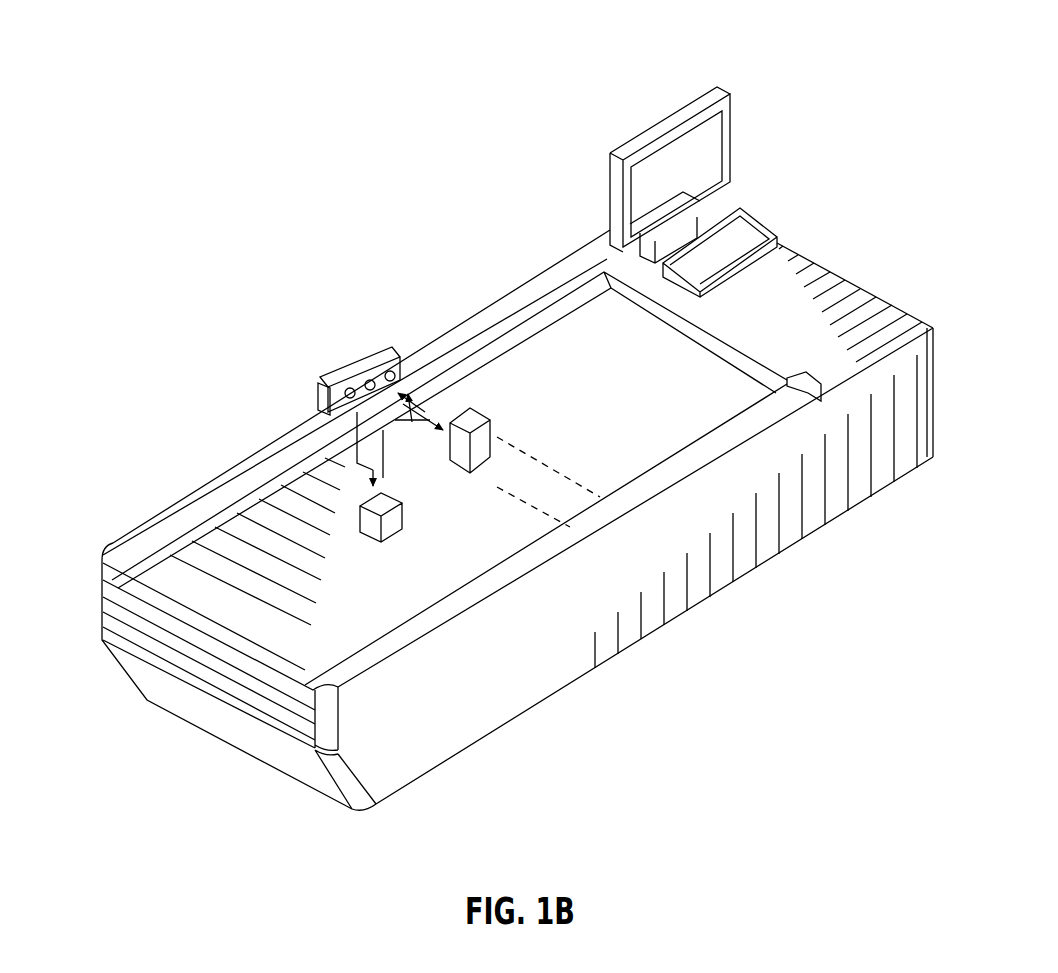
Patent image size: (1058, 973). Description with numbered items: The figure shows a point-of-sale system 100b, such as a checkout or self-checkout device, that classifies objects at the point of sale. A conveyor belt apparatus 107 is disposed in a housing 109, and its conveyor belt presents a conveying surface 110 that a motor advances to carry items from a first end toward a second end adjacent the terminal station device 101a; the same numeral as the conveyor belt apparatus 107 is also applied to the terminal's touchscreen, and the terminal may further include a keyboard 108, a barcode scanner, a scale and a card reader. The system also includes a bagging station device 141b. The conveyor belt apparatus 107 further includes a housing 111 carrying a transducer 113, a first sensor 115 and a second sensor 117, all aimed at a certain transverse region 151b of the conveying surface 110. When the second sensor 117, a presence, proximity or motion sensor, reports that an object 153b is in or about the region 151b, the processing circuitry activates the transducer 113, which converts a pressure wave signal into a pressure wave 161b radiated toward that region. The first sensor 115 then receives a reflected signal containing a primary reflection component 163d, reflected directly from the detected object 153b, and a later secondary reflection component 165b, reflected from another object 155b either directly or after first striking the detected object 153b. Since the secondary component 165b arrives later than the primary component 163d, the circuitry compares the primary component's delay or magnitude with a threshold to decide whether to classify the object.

The POS system 100b is at (120, 79).
The display device 101a is at (726, 68).
The conveyor belt apparatus 107 is at (700, 183).
The keyboard 108 is at (745, 238).
The housing 109 is at (550, 643).
The conveying surface 110 is at (630, 378).
The housing 111 is at (379, 339).
The transducer 113 is at (349, 389).
The first sensor 115 is at (393, 373).
The second sensor 117 is at (372, 381).
The bagging station device 141b is at (807, 339).
The certain transverse region 151b is at (587, 483).
The detected object 153b is at (466, 472).
The other object 155b is at (392, 540).
The pressure wave 161b is at (323, 423).
The movement direction 163d is at (437, 403).
The secondary reflection component 165b is at (323, 400).